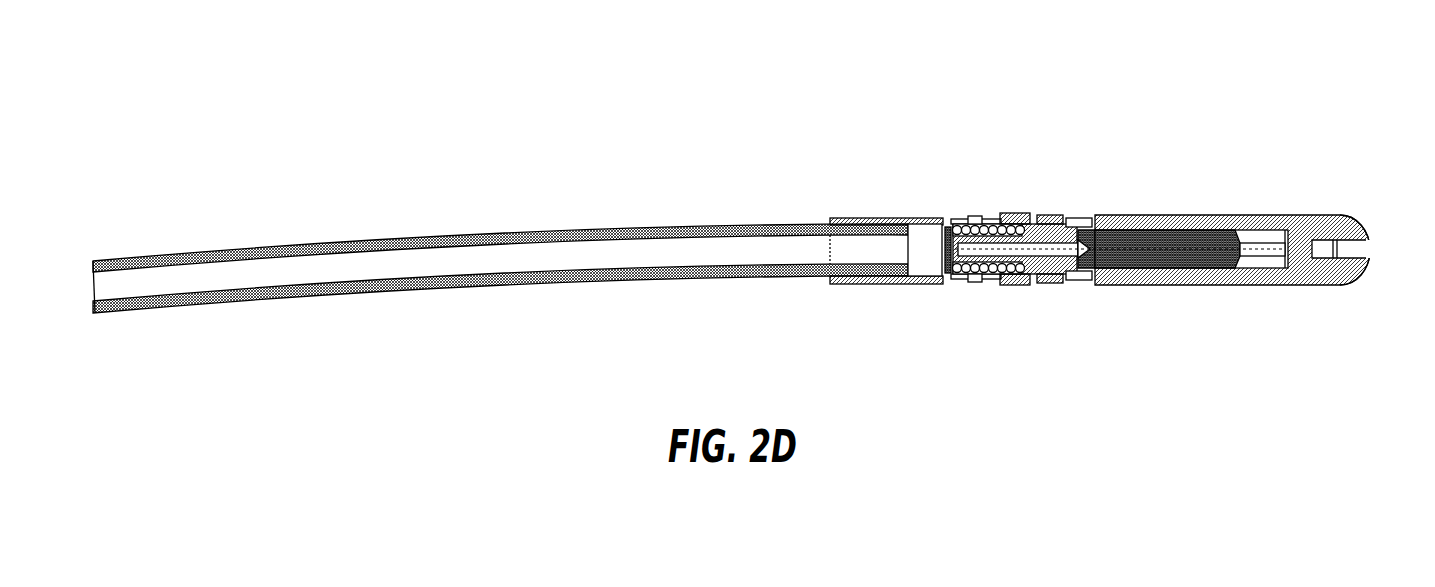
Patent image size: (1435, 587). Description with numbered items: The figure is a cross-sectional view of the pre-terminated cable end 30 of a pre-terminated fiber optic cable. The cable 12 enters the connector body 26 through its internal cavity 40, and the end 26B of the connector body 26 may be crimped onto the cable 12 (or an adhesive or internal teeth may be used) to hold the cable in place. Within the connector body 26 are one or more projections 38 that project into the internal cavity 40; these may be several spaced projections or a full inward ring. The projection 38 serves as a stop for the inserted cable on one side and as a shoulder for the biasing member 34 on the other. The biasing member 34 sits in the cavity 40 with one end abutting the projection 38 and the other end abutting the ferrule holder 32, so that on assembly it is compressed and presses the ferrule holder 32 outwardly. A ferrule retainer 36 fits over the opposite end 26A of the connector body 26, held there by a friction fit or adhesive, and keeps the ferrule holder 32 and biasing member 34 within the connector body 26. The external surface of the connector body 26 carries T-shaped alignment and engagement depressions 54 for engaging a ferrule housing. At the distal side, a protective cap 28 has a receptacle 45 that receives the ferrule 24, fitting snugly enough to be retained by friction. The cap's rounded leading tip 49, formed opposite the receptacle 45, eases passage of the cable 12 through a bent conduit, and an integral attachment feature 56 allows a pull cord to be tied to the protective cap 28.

The cable 12 is at (560, 268).
The ferrule 24 is at (1213, 267).
The connector body 26 is at (866, 218).
The end of the connector body 26A is at (1030, 213).
The end of the connector body 26B is at (829, 218).
The protective cap 28 is at (1280, 285).
The pre-terminated cable end 30 is at (1083, 122).
The ferrule holder 32 is at (1037, 283).
The biasing member 34 is at (987, 223).
The ferrule retainer 36 is at (1050, 215).
The projection 38 is at (960, 222).
The internal cavity 40 is at (928, 222).
The receptacle 45 is at (1252, 236).
The leading tip 49 is at (1350, 215).
The T-shaped alignment and engagement depressions 54 is at (992, 277).
The attachment feature 56 is at (1379, 274).